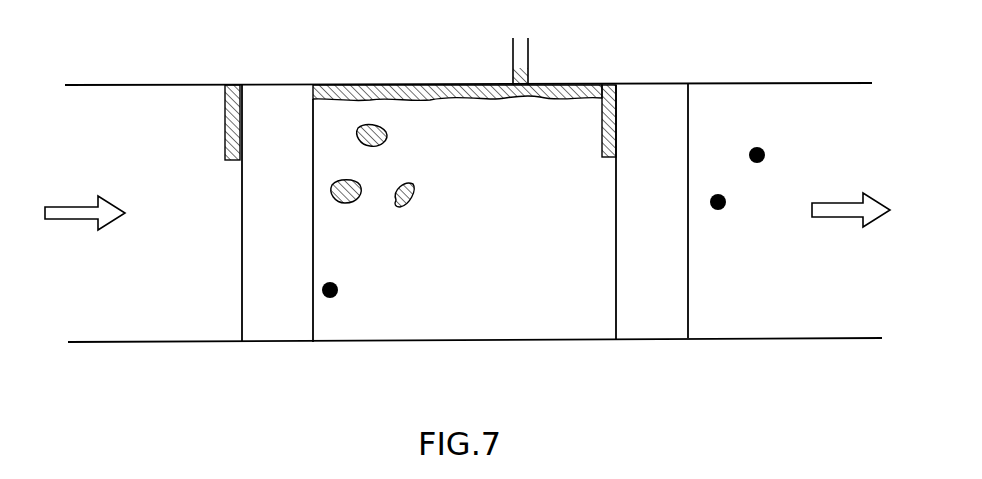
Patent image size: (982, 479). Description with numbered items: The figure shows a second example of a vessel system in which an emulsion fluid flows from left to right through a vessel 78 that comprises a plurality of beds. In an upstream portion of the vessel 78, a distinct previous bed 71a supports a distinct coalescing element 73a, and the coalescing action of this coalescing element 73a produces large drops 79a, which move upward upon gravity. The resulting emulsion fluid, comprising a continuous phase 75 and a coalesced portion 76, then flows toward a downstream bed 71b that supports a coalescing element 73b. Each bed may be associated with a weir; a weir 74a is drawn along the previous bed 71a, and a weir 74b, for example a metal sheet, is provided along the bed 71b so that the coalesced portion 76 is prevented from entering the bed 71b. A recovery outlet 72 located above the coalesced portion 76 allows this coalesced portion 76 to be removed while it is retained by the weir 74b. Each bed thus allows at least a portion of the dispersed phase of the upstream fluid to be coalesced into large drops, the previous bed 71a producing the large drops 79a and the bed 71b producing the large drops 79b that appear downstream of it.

The distinct previous bed 71a is at (242, 283).
The bed 71b is at (689, 106).
The recovery outlet 72 is at (530, 52).
The distinct coalescing element 73a is at (280, 312).
The coalescing element 73b is at (652, 107).
The weir 74a is at (225, 126).
The weir 74b is at (601, 128).
The continuous phase 75 is at (478, 257).
The coalesced portion 76 is at (360, 125).
The vessel 78 is at (162, 343).
The large drops 79a is at (334, 296).
The large drops 79b is at (724, 207).